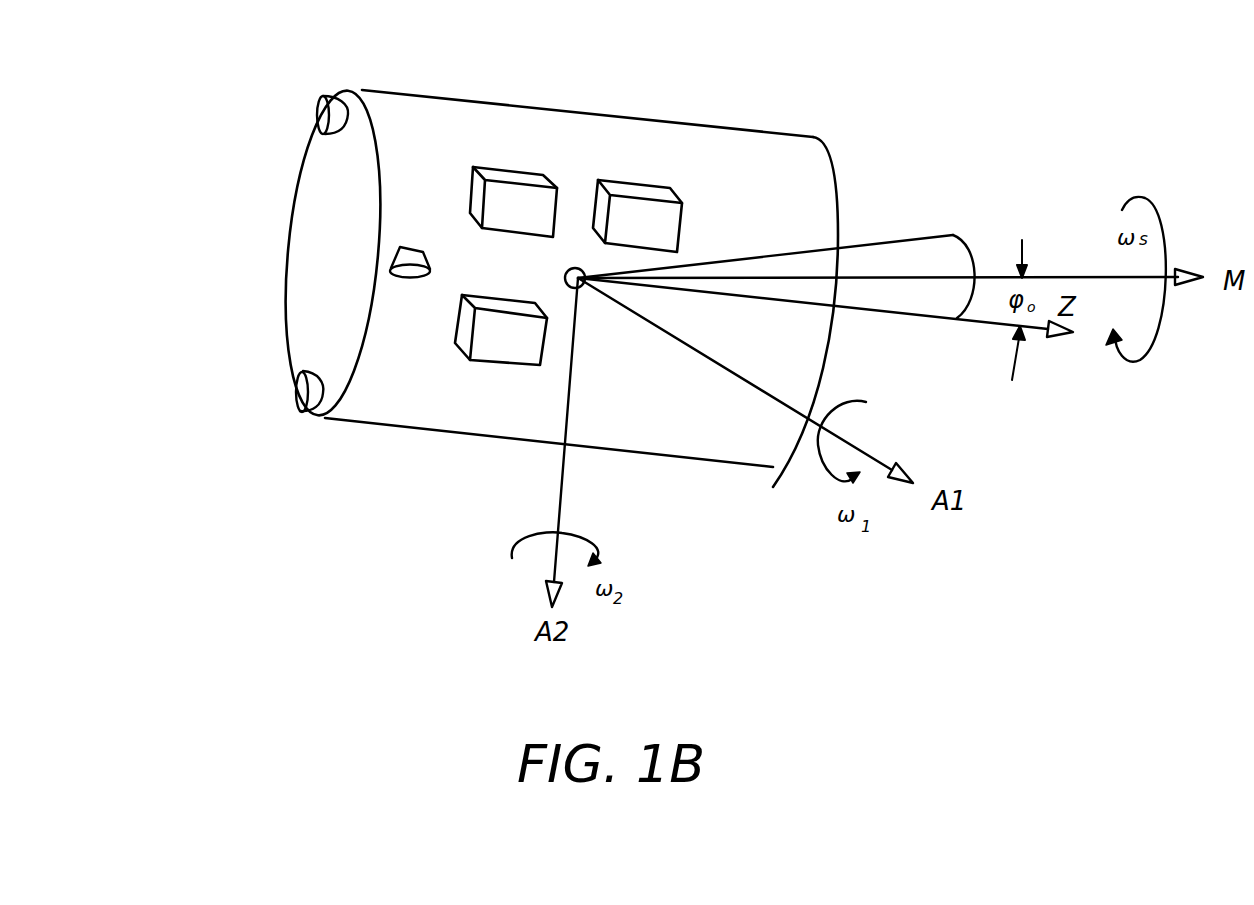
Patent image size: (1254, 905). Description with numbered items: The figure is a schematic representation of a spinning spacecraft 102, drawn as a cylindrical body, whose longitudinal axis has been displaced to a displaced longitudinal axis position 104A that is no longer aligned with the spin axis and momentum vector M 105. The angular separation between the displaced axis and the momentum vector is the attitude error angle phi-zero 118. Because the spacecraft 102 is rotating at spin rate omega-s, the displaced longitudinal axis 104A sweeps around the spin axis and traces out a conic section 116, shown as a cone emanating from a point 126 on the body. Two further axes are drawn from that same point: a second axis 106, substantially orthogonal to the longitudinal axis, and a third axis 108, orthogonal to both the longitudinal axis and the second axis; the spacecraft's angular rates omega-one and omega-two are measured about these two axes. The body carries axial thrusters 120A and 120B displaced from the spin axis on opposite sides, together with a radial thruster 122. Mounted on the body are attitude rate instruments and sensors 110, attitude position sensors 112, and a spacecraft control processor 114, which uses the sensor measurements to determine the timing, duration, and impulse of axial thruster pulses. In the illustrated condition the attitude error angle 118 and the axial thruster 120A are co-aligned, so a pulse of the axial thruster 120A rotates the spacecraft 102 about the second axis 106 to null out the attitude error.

The spacecraft 102 is at (467, 102).
The displaced longitudinal axis position 104A is at (1067, 334).
The momentum vector M 105 is at (1187, 273).
The second axis A1 106 is at (792, 405).
The third axis A2 108 is at (562, 498).
The attitude rate instruments and sensors 110 is at (520, 167).
The attitude position sensors 112 is at (653, 185).
The spacecraft control processor 114 is at (487, 358).
The conic section 116 is at (912, 237).
The attitude error angle phi-zero 118 is at (987, 305).
The axial thruster 120A is at (295, 387).
The axial thruster 120B is at (317, 118).
The radial thruster 122 is at (390, 267).
The pivot point / origin 126 is at (586, 287).